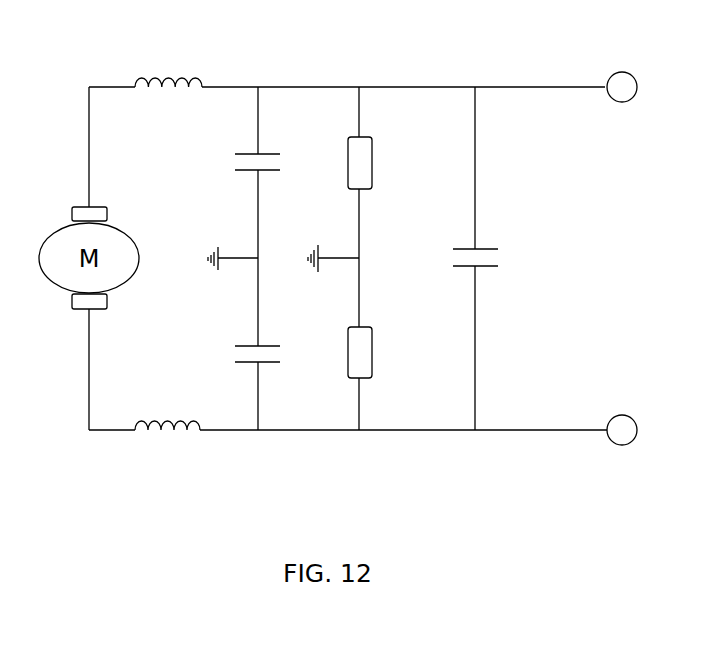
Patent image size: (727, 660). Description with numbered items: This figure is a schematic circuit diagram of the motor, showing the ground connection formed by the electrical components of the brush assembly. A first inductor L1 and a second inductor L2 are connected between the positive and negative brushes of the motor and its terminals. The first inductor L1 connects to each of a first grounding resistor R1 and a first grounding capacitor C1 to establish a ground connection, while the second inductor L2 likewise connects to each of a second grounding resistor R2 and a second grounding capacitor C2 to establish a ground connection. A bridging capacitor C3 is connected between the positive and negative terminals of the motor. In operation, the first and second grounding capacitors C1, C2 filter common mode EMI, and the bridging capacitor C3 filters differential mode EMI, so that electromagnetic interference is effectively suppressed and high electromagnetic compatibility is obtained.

The first inductor L1 is at (143, 82).
The second inductor L2 is at (140, 433).
The first grounding capacitor C1 is at (267, 163).
The second grounding capacitor C2 is at (262, 358).
The bridging capacitor C3 is at (473, 259).
The first grounding resistor R1 is at (355, 163).
The second grounding resistor R2 is at (358, 360).